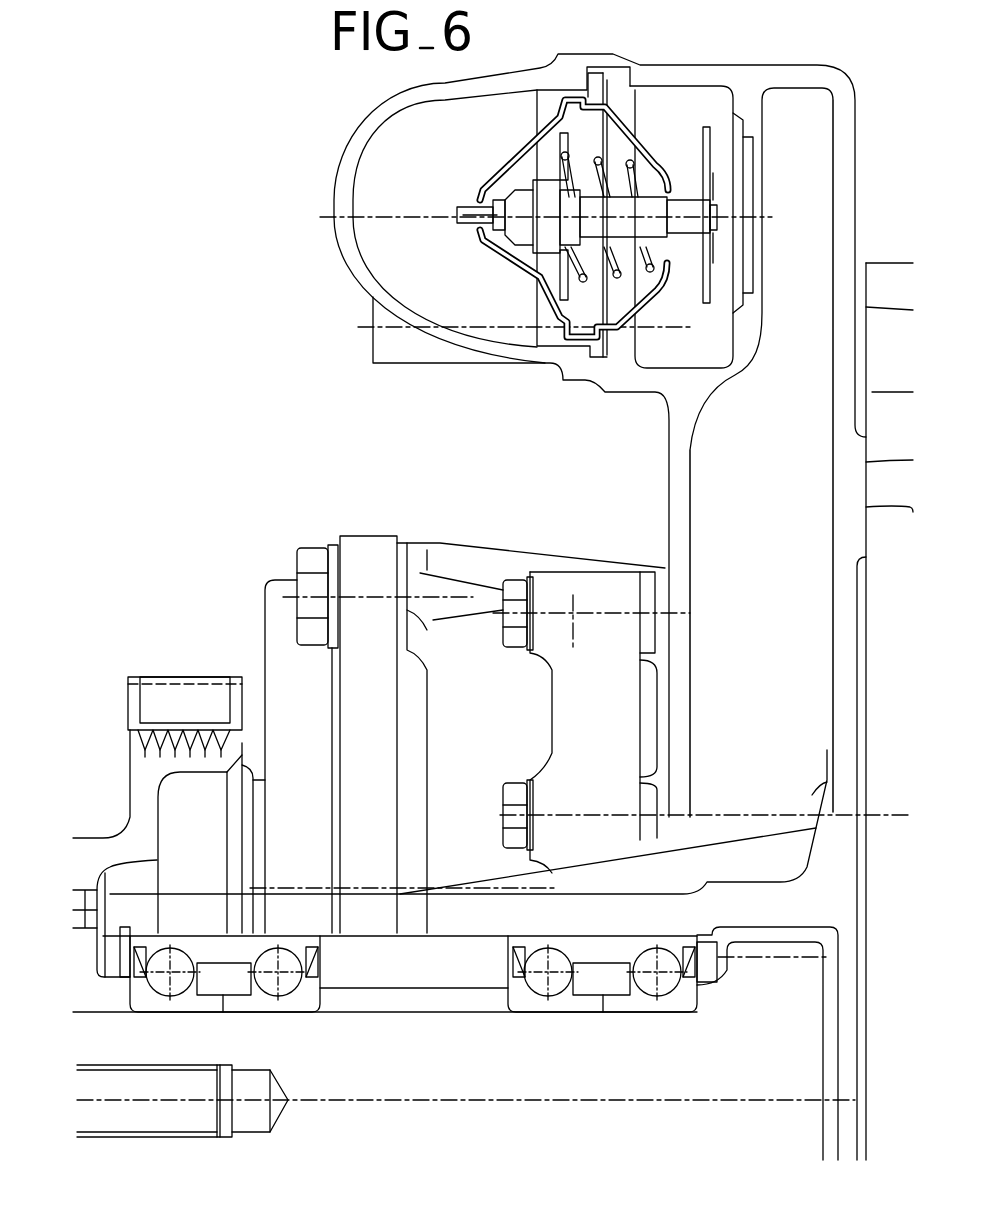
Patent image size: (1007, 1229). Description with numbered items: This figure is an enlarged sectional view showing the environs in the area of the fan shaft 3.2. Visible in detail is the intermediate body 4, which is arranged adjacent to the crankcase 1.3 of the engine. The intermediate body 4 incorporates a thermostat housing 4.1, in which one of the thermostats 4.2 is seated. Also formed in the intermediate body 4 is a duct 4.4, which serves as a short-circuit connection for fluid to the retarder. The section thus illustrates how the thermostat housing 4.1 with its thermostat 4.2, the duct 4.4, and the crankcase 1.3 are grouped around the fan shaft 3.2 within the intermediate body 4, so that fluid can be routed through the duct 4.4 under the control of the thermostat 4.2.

The intermediate body 4 is at (825, 70).
The thermostat housing 4.1 is at (433, 340).
The thermostat 4.2 is at (630, 300).
The duct 4.4 is at (791, 537).
The crankcase 1.3 is at (871, 278).
The fan shaft 3.2 is at (482, 1078).